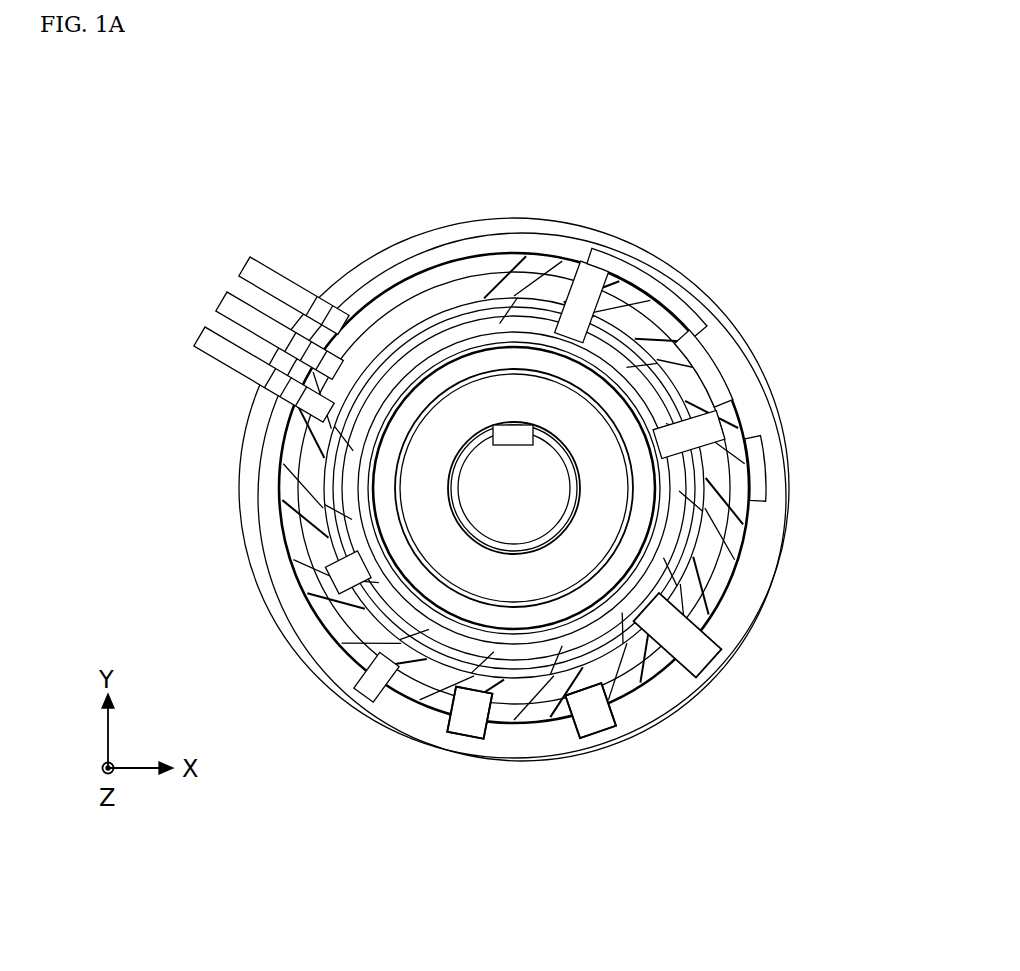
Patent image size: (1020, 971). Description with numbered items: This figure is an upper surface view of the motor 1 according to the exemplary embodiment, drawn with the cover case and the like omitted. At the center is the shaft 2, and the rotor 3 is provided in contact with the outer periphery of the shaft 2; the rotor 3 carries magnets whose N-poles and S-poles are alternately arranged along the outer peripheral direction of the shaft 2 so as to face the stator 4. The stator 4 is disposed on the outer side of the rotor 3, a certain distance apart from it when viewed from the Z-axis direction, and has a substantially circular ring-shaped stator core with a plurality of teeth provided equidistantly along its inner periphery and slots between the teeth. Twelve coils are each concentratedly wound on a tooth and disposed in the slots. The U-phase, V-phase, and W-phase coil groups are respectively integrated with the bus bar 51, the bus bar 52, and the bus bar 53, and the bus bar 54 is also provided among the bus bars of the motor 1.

The motor 1 is at (314, 198).
The shaft 2 is at (483, 462).
The rotor 3 is at (555, 398).
The stator 4 is at (766, 443).
The bus bar 51 is at (508, 690).
The bus bar 52 is at (697, 353).
The bus bar 53 is at (652, 292).
The bus bar 54 is at (610, 618).